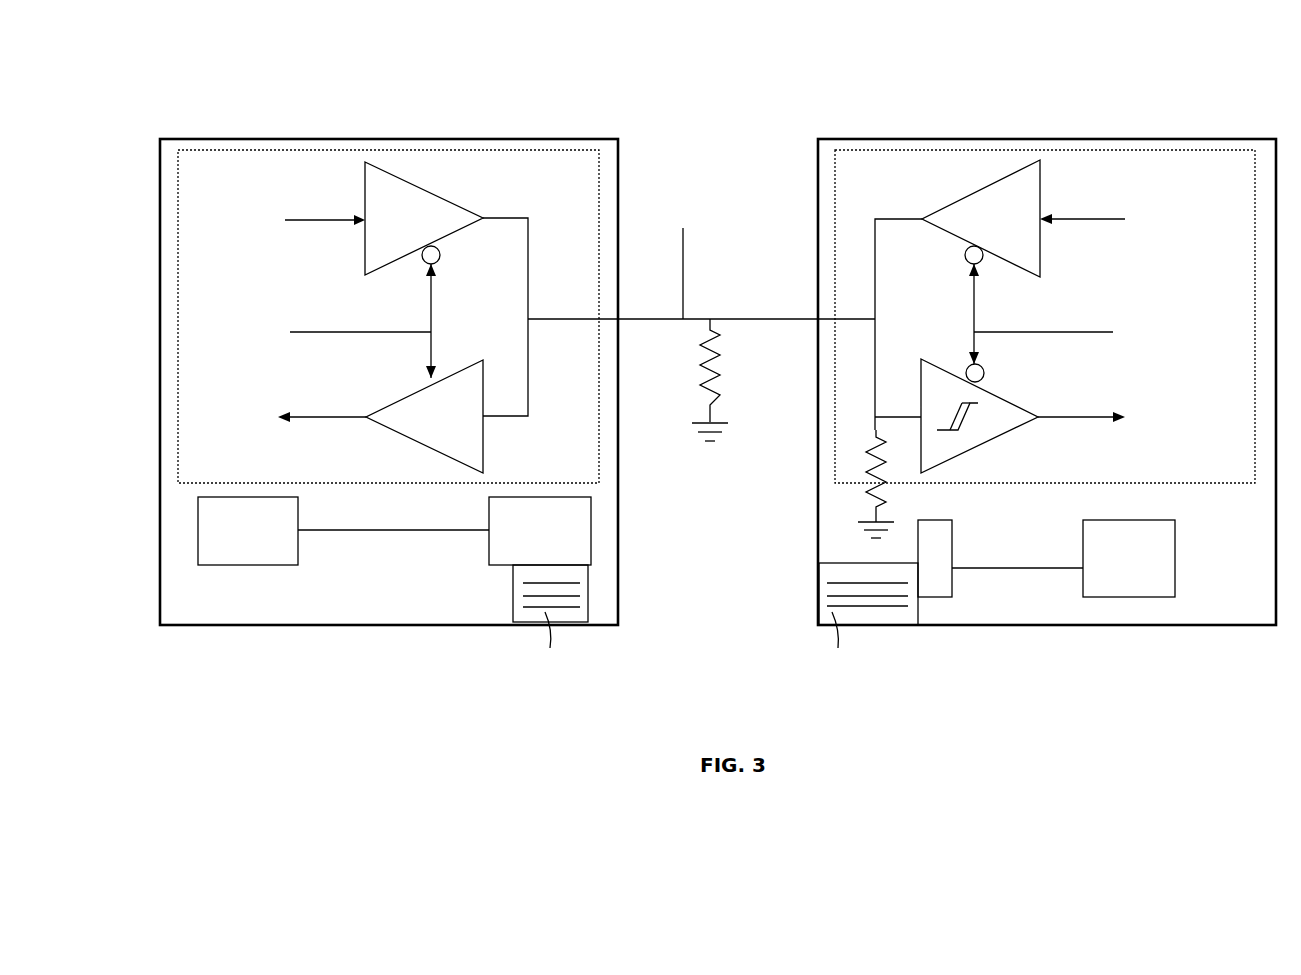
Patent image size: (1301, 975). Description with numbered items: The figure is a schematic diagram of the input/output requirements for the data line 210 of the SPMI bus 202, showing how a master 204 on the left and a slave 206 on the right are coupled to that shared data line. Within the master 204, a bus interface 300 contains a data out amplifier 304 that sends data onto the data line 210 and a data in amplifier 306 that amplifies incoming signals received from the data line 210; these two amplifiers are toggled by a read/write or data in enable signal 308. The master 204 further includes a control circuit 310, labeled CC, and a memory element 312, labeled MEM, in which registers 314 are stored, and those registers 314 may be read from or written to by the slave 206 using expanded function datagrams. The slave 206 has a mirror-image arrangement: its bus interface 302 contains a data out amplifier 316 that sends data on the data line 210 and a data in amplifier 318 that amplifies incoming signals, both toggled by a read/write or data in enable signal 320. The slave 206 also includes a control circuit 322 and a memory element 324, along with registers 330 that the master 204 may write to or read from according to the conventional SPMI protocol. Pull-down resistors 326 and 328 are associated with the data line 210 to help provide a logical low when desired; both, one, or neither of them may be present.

The SPMI bus 202 is at (720, 125).
The master 204 is at (400, 139).
The slave 206 is at (1060, 139).
The data line 210 is at (637, 318).
The bus interface 300 is at (557, 150).
The bus interface 302 is at (1225, 150).
The data out amplifier 304 is at (455, 200).
The data in amplifier 306 is at (465, 368).
The read/write or data in enable signal 308 is at (333, 333).
The control circuit 310 is at (305, 565).
The memory element 312 is at (591, 545).
The registers 314 is at (588, 600).
The data out amplifier 316 is at (955, 200).
The data in amplifier 318 is at (1020, 432).
The read/write or data in enable signal 320 is at (1045, 333).
The control circuit 322 is at (1128, 597).
The memory element 324 is at (935, 597).
The pull-down resistor 326 is at (720, 388).
The pull-down resistor 328 is at (876, 493).
The registers 330 is at (819, 590).